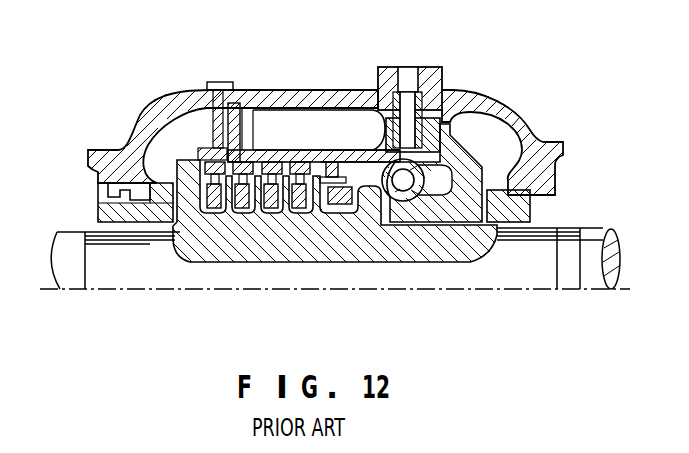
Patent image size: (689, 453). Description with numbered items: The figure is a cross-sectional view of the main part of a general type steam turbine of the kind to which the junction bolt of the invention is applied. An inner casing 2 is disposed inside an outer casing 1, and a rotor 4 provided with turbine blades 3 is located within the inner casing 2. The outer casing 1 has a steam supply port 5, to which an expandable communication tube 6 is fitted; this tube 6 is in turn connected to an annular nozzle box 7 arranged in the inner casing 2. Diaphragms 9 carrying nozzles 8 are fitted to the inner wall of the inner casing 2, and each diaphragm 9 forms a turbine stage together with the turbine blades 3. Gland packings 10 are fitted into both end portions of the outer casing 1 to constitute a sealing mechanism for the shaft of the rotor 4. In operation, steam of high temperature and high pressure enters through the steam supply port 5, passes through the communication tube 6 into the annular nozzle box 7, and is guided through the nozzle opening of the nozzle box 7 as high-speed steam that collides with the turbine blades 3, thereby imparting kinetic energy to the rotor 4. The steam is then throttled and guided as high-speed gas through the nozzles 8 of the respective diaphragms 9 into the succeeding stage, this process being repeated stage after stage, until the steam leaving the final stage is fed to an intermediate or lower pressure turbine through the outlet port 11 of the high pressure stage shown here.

The outer casing 1 is at (334, 89).
The inner casing 2 is at (296, 153).
The turbine blades 3 is at (282, 187).
The rotor 4 is at (207, 250).
The steam supply port 5 is at (407, 78).
The expandable communication tube 6 is at (421, 97).
The annular nozzle box 7 is at (403, 192).
The nozzles 8 is at (326, 186).
The diaphragms 9 is at (331, 156).
The gland packings 10 is at (100, 224).
The outlet port 11 is at (163, 121).